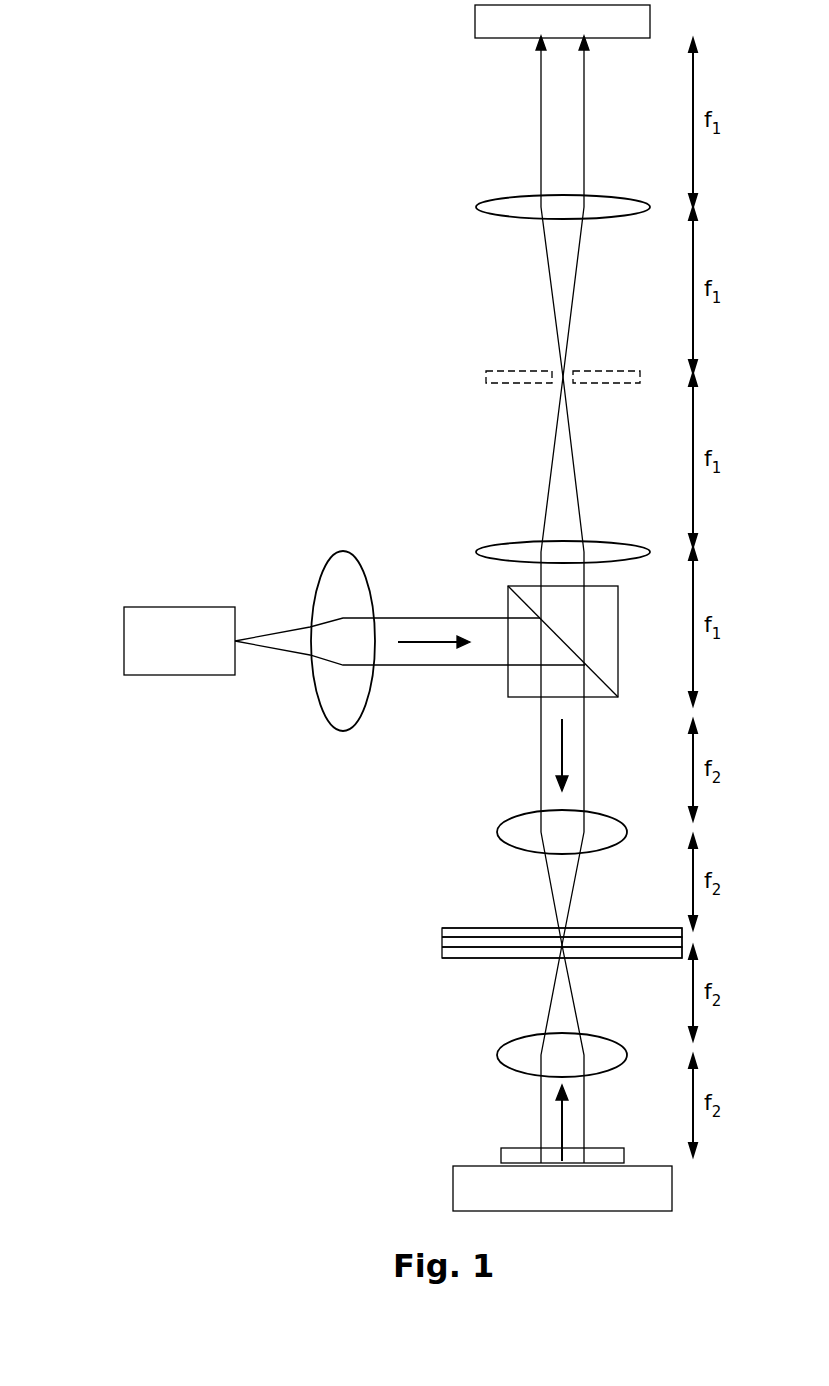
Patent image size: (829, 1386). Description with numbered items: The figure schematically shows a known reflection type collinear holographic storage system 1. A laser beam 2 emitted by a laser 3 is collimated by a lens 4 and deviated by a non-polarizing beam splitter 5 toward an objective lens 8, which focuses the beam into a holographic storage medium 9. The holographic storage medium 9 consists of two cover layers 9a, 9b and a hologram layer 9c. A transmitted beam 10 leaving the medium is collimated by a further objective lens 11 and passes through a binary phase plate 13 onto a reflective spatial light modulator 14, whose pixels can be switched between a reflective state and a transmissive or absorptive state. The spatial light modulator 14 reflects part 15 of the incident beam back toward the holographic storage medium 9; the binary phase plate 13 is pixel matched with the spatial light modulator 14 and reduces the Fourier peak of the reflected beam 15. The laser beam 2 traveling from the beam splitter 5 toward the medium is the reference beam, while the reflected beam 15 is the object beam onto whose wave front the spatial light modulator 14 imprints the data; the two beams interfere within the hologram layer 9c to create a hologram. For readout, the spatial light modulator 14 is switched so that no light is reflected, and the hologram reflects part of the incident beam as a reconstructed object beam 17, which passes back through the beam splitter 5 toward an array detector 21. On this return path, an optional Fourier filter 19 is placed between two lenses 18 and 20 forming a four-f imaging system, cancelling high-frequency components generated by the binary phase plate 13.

The reflection type collinear holographic storage system 1 is at (297, 122).
The laser beam 2 is at (290, 627).
The laser 3 is at (165, 679).
The lens 4 is at (335, 553).
The non-polarizing beam splitter 5 is at (508, 602).
The objective lens 8 is at (497, 835).
The holographic storage medium 9 is at (455, 967).
The cover layer 9a is at (442, 930).
The cover layer 9b is at (442, 953).
The hologram layer 9c is at (442, 941).
The transmitted beam 10 is at (545, 1012).
The further objective lens 11 is at (497, 1056).
The binary phase plate 13 is at (495, 1152).
The reflective spatial light modulator 14 is at (453, 1192).
The reflected beam 15 is at (587, 1117).
The reconstructed object beam 17 is at (586, 573).
The lens 18 is at (478, 553).
The Fourier filter 19 is at (485, 377).
The lens 20 is at (475, 207).
The array detector 21 is at (475, 22).